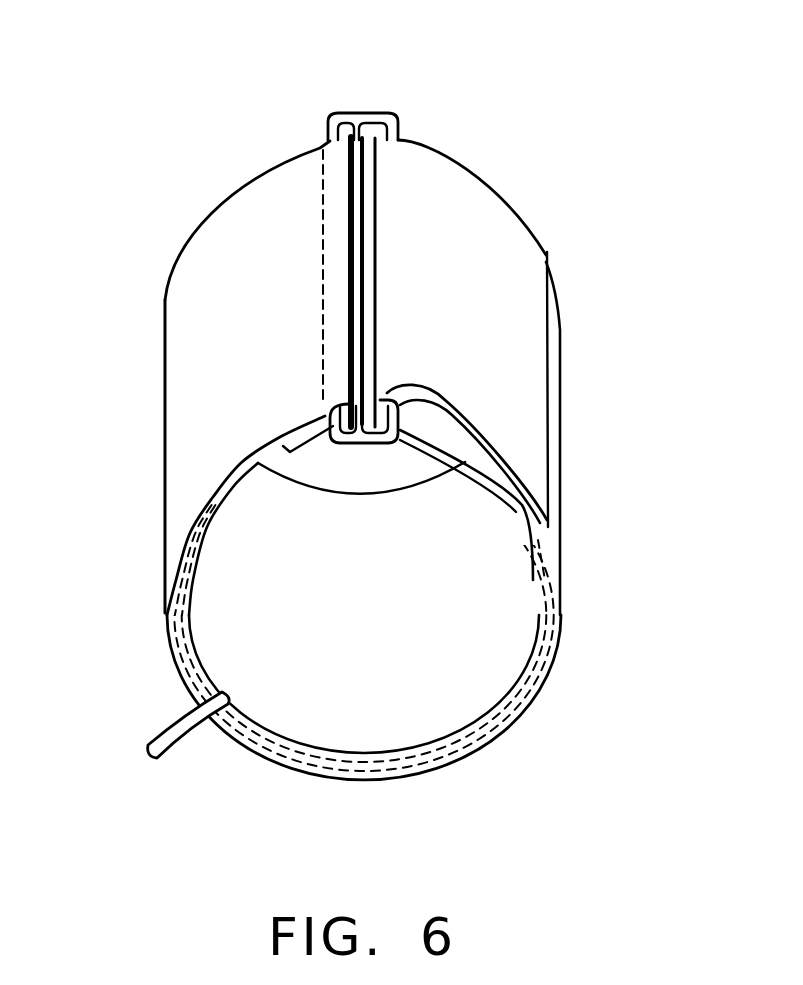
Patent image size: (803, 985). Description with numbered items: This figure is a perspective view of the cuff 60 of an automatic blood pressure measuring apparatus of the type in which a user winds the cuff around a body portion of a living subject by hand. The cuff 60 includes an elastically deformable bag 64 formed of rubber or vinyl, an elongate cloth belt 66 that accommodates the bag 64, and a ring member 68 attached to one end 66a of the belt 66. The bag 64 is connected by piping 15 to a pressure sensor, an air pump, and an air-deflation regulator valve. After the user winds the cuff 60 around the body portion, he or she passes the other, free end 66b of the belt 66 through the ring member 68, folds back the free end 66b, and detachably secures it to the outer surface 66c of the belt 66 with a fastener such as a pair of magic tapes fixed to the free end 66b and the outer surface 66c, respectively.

The piping 15 is at (167, 727).
The cuff 60 is at (379, 398).
The elastically deformable bag 64 is at (557, 657).
The elongate cloth belt 66 is at (373, 338).
The one end of the belt 66a is at (275, 197).
The free end of the belt 66b is at (522, 268).
The outer surface of the belt 66c is at (553, 532).
The ring member 68 is at (356, 112).